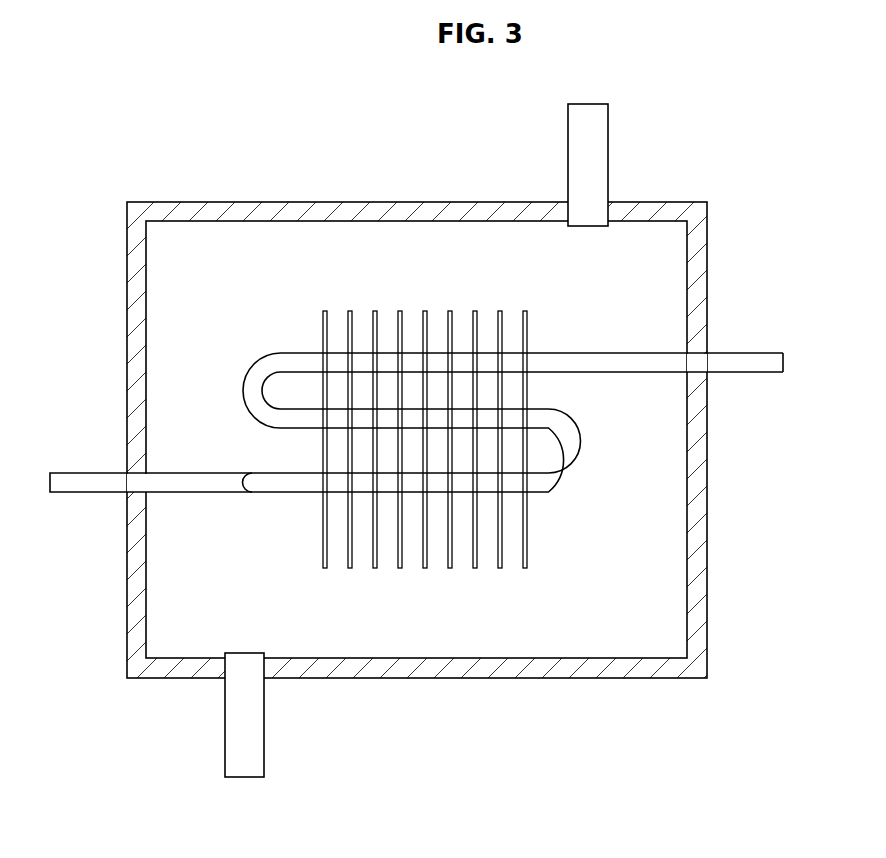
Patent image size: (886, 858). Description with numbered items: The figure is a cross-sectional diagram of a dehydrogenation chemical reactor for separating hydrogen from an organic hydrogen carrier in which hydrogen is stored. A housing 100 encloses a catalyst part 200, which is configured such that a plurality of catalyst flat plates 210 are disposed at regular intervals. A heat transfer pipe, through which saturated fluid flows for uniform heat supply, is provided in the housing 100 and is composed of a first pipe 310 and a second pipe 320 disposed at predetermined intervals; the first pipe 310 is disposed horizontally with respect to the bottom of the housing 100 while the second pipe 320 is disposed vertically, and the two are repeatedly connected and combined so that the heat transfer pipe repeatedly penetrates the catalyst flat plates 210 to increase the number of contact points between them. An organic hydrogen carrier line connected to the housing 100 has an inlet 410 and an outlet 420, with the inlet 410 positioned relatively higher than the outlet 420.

The housing 100 is at (232, 210).
The catalyst part 200 is at (429, 438).
The catalyst flat plate 210 is at (449, 312).
The first pipe 310 is at (744, 354).
The second pipe 320 is at (578, 452).
The inlet 410 is at (235, 752).
The outlet 420 is at (600, 128).